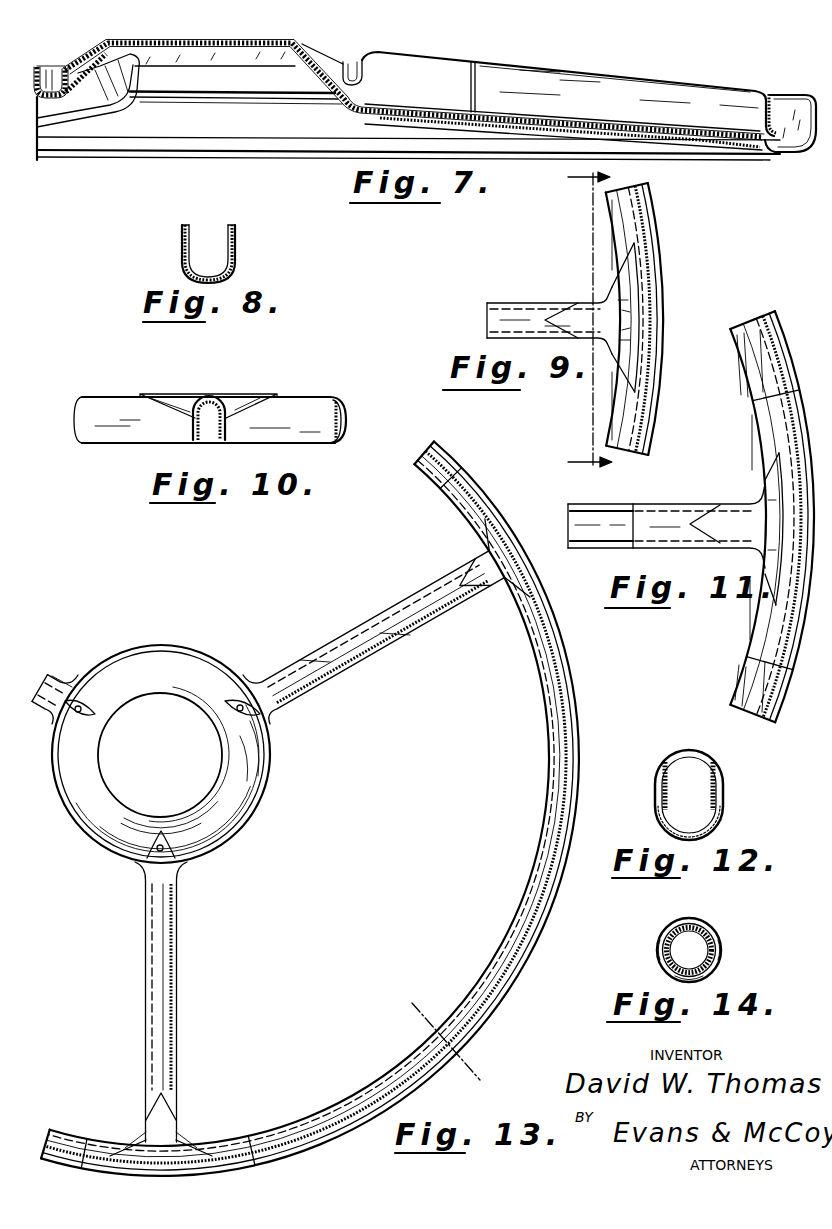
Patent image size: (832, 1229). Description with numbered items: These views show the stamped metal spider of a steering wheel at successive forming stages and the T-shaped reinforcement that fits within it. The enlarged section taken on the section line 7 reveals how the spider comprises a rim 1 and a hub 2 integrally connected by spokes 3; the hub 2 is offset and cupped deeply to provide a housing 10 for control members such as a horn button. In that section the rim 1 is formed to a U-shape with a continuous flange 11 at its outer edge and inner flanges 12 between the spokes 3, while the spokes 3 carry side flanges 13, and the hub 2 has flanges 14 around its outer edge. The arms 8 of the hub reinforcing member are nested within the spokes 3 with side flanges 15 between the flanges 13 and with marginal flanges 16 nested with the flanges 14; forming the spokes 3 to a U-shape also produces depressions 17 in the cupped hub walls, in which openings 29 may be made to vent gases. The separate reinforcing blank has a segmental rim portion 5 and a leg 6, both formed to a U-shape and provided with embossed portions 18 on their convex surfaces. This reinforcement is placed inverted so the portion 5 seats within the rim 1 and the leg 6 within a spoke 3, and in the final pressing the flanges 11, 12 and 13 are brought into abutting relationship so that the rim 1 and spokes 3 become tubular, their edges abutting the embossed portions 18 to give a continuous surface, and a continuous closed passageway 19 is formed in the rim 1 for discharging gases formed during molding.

In FIG. 7, the rim 1 is at (790, 155).
In FIG. 8, the rim 1 is at (220, 280).
In FIG. 9, the rim 1 is at (685, 319).
In FIG. 11, the rim 1 is at (752, 325).
In FIG. 12, the rim 1 is at (705, 836).
In FIG. 14, the rim 1 is at (705, 980).
In FIG. 13, the rim 1 is at (552, 713).
In FIG. 7, the hub 2 is at (345, 100).
In FIG. 11, the hub 2 is at (575, 530).
In FIG. 13, the hub 2 is at (273, 747).
In FIG. 7, the spokes 3 is at (650, 133).
In FIG. 13, the spokes 3 is at (177, 977).
In FIG. 10, the segmental rim portion 5 is at (338, 398).
In FIG. 9, the segmental rim portion 5 is at (640, 425).
In FIG. 11, the segmental rim portion 5 is at (767, 433).
In FIG. 12, the segmental rim portion 5 is at (689, 750).
In FIG. 14, the segmental rim portion 5 is at (695, 925).
In FIG. 13, the segmental rim portion 5 is at (543, 627).
In FIG. 10, the leg 6 is at (210, 425).
In FIG. 9, the leg 6 is at (518, 317).
In FIG. 11, the leg 6 is at (667, 525).
In FIG. 13, the leg 6 is at (407, 600).
In FIG. 7, the section line 7— 7 is at (278, 42).
In FIG. 13, the section line 7— 7 is at (163, 760).
In FIG. 7, the arms 8 is at (452, 110).
In FIG. 13, the arms 8 is at (313, 660).
In FIG. 7, the housing 10 is at (236, 75).
In FIG. 9, the housing 10 is at (572, 320).
In FIG. 7, the continuous flange 11 is at (798, 95).
In FIG. 8, the continuous flange 11 is at (182, 240).
In FIG. 11, the continuous flange 11 is at (777, 718).
In FIG. 12, the continuous flange 11 is at (724, 783).
In FIG. 14, the continuous flange 11 is at (720, 940).
In FIG. 7, the inner flanges 12 is at (770, 95).
In FIG. 8, the inner flanges 12 is at (237, 233).
In FIG. 11, the inner flanges 12 is at (737, 700).
In FIG. 12, the inner flanges 12 is at (657, 785).
In FIG. 14, the inner flanges 12 is at (658, 945).
In FIG. 7, the side flanges 13 is at (622, 80).
In FIG. 11, the side flanges 13 is at (592, 545).
In FIG. 7, the flanges 14 is at (42, 66).
In FIG. 13, the flanges 14 is at (177, 646).
In FIG. 7, the side flanges 15 is at (485, 68).
In FIG. 7, the marginal flanges 16 is at (75, 70).
In FIG. 13, the marginal flanges 16 is at (100, 847).
In FIG. 7, the depressions 17 is at (350, 62).
In FIG. 13, the depressions 17 is at (267, 777).
In FIG. 10, the embossed portions 18 is at (280, 398).
In FIG. 9, the embossed portions 18 is at (633, 330).
In FIG. 11, the embossed portions 18 is at (773, 593).
In FIG. 13, the embossed portions 18 is at (483, 570).
In FIG. 14, the continuous closed passageway 19 is at (672, 955).
In FIG. 13, the openings 29 is at (97, 695).